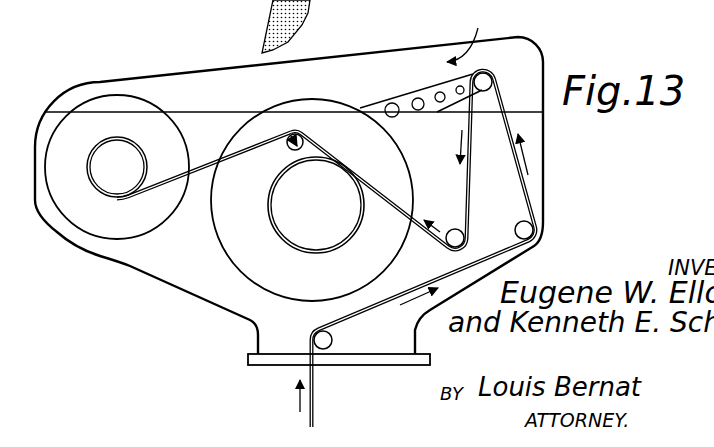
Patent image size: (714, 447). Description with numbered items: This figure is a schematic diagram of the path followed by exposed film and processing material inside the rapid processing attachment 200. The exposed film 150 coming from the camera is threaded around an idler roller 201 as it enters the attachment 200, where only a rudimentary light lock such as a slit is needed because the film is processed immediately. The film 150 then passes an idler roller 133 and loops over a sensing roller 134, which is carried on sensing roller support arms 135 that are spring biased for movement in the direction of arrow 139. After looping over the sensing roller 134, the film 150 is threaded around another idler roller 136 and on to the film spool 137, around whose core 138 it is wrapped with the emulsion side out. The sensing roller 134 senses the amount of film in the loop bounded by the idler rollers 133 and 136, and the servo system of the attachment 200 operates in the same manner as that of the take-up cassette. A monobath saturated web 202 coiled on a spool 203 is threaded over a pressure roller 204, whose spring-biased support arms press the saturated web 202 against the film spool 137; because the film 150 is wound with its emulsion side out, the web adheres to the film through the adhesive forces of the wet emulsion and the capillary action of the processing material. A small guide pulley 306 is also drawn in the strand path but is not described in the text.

The exposed film 150 is at (316, 387).
The arrow 139 is at (463, 37).
The sensing roller 134 is at (485, 80).
The sensing roller support arms 135 is at (393, 108).
The spool 203 is at (113, 96).
The monobath saturated web 202 is at (205, 166).
The small guide pulley 306 is at (287, 138).
The pressure roller 204 is at (285, 152).
The rapid processing attachment 200 is at (543, 163).
The idler roller 136 is at (453, 229).
The idler roller 133 is at (518, 224).
The film spool 137 is at (221, 246).
The core 138 is at (300, 230).
The idler roller 201 is at (333, 341).